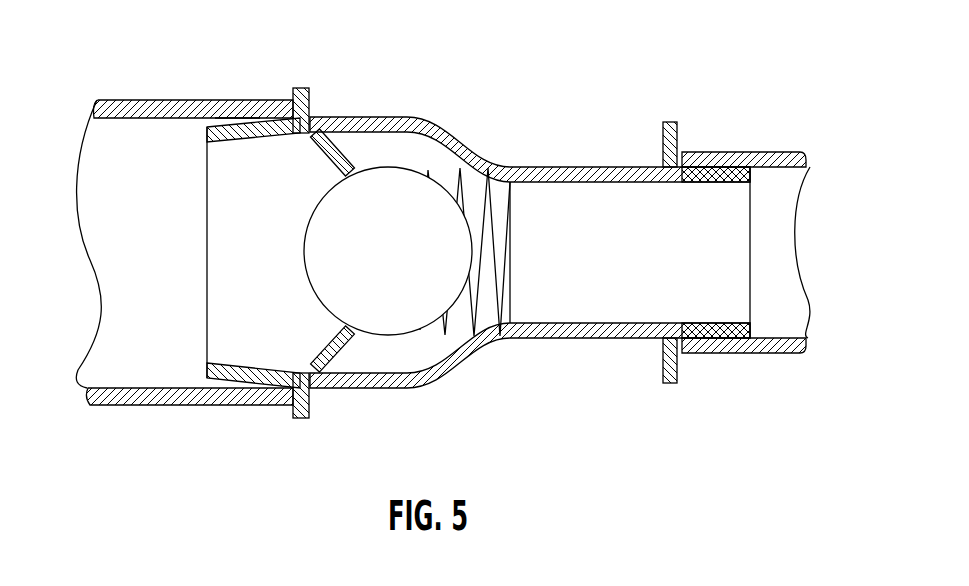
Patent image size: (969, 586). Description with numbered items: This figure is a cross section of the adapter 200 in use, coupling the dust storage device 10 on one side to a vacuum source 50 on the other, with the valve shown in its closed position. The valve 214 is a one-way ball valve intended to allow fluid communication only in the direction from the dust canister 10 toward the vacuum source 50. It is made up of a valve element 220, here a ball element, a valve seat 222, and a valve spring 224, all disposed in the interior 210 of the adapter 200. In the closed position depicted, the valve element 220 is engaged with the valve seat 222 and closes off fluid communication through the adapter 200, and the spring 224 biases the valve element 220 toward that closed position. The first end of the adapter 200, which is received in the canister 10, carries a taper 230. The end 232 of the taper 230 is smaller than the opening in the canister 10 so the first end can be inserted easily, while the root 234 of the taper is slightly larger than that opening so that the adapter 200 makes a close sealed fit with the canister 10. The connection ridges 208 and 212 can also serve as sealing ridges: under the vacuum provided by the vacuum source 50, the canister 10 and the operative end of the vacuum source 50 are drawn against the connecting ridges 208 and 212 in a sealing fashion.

The dust storage device 10 is at (128, 86).
The vacuum source 50 is at (760, 126).
The adapter 200 is at (460, 114).
The connection ridge 208 is at (294, 88).
The interior 210 is at (225, 290).
The connection ridge 212 is at (668, 122).
The valve 214 is at (391, 348).
The valve element 220 is at (320, 203).
The valve seat 222 is at (332, 356).
The valve spring 224 is at (518, 290).
The taper 230 is at (235, 118).
The end of the taper 232 is at (207, 133).
The root of the taper 234 is at (286, 133).